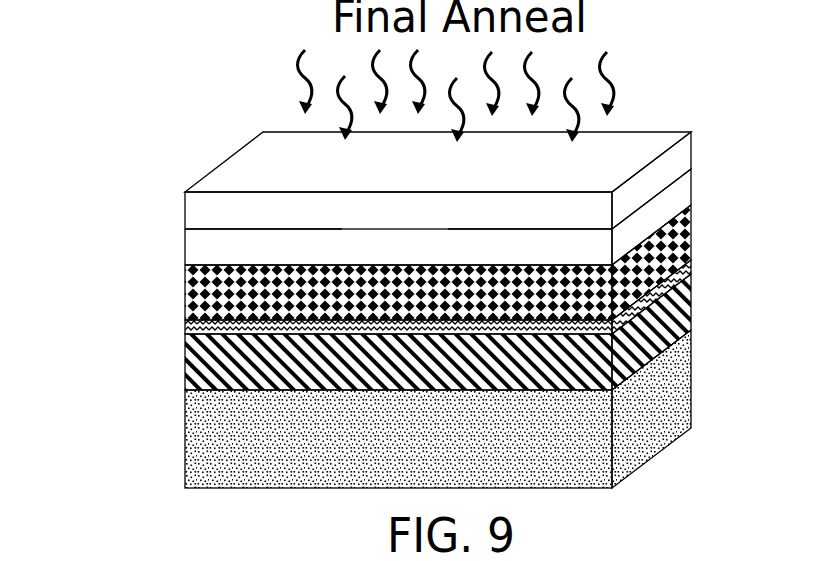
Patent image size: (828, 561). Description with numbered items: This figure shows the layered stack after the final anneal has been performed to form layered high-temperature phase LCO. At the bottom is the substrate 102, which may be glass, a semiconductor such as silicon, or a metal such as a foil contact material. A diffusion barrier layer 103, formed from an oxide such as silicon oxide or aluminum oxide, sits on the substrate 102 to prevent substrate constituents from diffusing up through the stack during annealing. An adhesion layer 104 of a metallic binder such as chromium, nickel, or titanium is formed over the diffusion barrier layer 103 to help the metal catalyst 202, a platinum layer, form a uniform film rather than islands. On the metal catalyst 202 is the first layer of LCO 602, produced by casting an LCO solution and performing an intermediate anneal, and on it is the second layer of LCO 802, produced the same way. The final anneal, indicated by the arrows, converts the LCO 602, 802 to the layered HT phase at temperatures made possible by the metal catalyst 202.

The second layer of LCO 802 is at (185, 203).
The first layer of LCO 602 is at (185, 239).
The metal catalyst 202 is at (185, 289).
The adhesion layer 104 is at (185, 326).
The diffusion barrier layer 103 is at (185, 359).
The substrate 102 is at (185, 429).